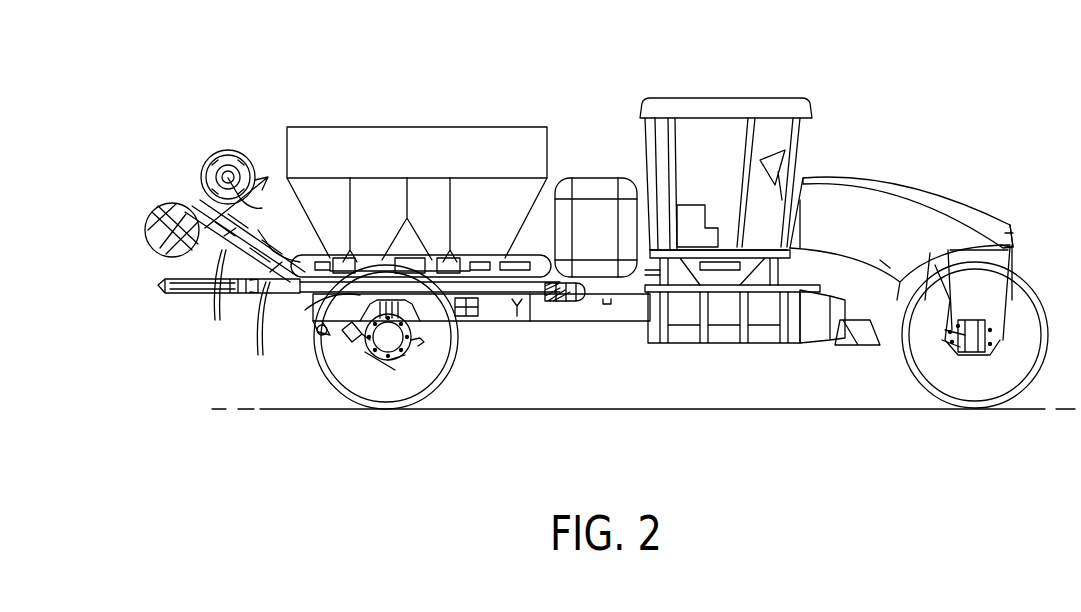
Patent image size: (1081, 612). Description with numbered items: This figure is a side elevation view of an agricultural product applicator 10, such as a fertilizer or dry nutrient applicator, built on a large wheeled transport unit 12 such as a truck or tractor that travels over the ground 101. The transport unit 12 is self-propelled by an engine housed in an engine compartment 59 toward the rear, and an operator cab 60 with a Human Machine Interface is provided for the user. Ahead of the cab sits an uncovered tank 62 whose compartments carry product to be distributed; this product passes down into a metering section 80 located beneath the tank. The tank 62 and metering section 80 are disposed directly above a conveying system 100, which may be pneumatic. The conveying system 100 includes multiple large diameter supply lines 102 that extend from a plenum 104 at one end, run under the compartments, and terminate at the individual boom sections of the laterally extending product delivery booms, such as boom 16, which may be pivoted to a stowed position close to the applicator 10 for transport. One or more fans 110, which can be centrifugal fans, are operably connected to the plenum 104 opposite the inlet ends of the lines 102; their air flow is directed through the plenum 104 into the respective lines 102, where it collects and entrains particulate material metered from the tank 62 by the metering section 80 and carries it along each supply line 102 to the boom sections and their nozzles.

The agricultural product applicator 10 is at (718, 386).
The wheeled transport unit 12 is at (833, 153).
The product delivery boom 16 is at (570, 331).
The engine compartment 59 is at (935, 190).
The operator cab 60 is at (730, 96).
The uncovered tank 62 is at (403, 105).
The metering section 80 is at (447, 312).
The conveying system 100 is at (318, 336).
The ground 101 is at (900, 410).
The large diameter supply line 102 is at (266, 331).
The plenum 104 is at (223, 299).
The fan 110 is at (200, 168).